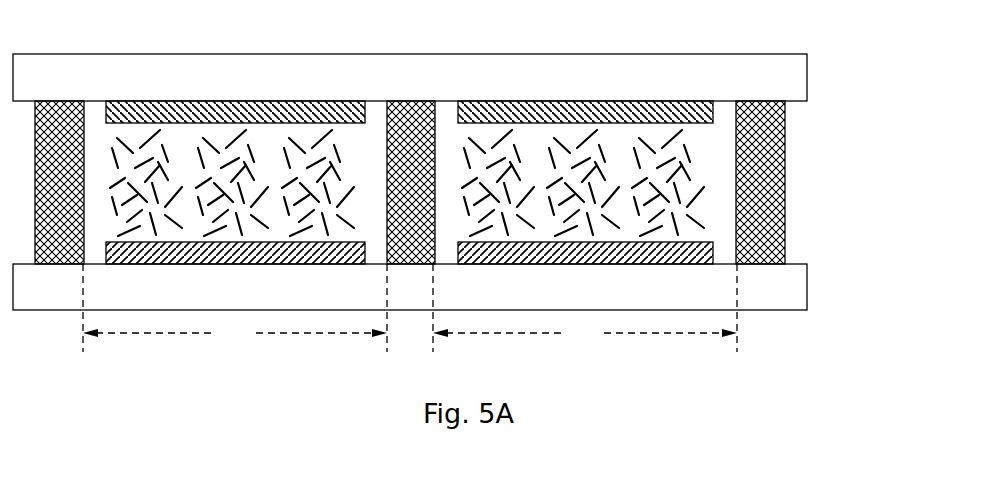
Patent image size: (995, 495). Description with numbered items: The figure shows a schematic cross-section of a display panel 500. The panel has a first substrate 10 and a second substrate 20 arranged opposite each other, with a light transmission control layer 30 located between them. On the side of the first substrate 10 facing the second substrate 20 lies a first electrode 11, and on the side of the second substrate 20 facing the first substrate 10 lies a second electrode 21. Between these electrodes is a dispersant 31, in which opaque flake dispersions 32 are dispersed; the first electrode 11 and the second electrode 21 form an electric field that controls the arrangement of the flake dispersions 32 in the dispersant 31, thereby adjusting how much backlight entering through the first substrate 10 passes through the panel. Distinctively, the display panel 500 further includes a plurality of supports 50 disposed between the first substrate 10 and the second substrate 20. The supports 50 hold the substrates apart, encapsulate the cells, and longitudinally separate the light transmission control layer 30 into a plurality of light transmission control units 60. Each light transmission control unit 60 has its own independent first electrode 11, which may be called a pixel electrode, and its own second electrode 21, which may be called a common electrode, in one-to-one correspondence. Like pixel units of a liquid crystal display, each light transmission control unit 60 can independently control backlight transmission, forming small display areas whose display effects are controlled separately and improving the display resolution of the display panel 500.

The display panel 500 is at (68, 364).
The second substrate 20 is at (783, 77).
The first substrate 10 is at (783, 285).
The support 50 is at (383, 100).
The light transmission control layer 30 is at (498, 136).
The second electrode 21 is at (695, 112).
The first electrode 11 is at (713, 252).
The dispersant 31 is at (409, 124).
The flake dispersion 32 is at (517, 155).
The light transmission control unit 60 is at (410, 308).